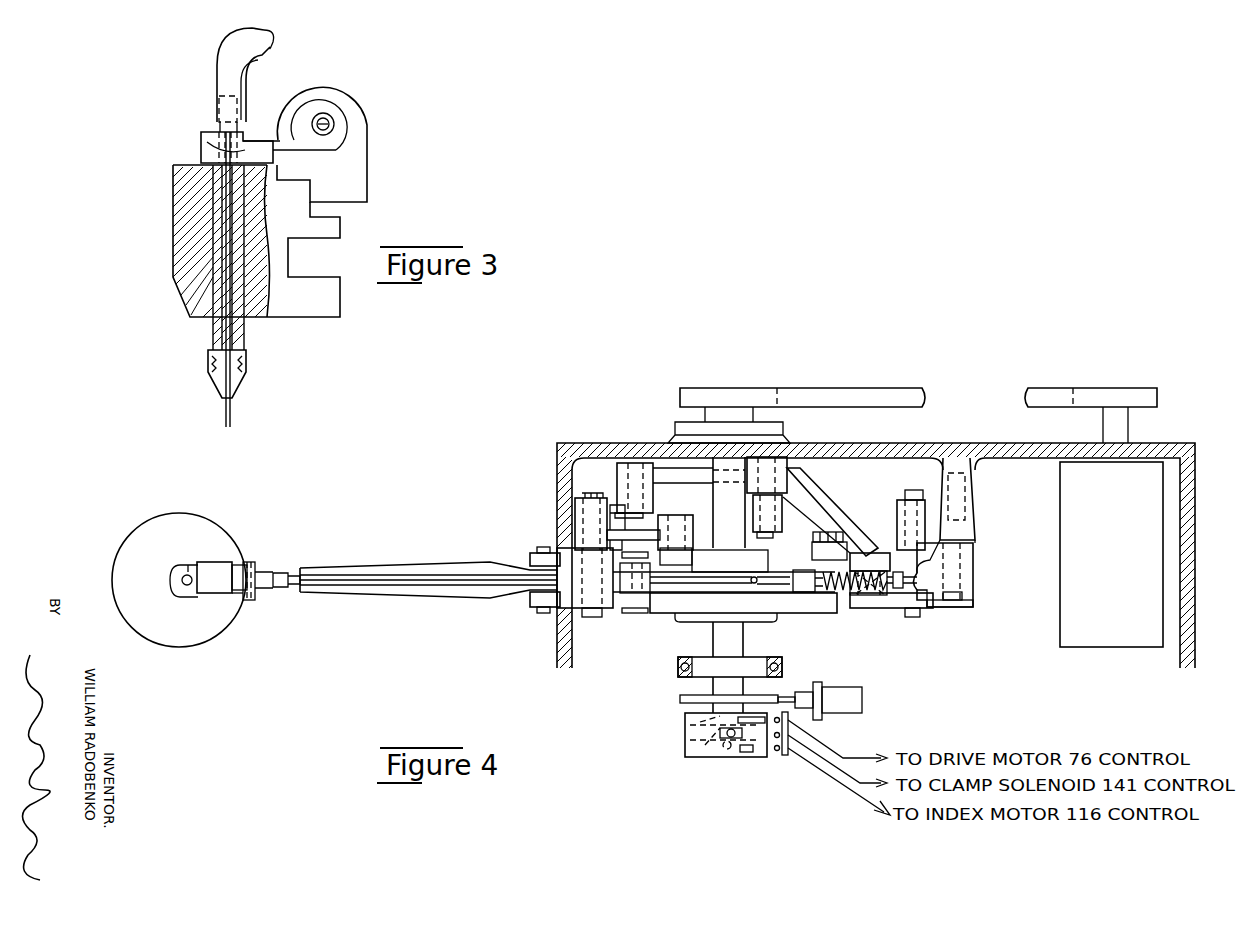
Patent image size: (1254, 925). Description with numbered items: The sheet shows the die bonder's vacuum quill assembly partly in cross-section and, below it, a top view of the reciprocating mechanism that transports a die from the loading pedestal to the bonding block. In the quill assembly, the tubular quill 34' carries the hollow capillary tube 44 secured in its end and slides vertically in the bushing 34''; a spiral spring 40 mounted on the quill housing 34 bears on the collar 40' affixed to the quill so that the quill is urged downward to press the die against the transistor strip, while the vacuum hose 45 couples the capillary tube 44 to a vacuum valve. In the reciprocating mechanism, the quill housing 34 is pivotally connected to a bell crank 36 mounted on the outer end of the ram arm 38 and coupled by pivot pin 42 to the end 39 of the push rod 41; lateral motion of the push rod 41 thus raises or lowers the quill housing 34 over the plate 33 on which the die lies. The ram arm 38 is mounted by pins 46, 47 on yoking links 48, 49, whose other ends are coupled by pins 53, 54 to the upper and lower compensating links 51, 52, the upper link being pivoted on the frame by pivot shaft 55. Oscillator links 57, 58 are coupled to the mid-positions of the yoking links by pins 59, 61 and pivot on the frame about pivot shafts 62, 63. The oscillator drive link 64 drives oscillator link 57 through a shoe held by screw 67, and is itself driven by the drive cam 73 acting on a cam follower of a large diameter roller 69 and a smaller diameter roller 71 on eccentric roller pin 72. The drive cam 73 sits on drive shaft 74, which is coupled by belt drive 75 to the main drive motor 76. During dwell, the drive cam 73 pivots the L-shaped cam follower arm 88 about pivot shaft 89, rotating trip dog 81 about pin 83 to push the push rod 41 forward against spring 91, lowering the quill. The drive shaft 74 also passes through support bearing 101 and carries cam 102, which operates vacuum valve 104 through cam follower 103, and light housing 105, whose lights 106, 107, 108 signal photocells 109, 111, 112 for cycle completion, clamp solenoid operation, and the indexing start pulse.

In FIG. 4, the plate 33 is at (217, 530).
In FIG. 3, the quill housing 34 is at (200, 241).
In FIG. 4, the quill housing 34 is at (186, 593).
In FIG. 3, the tubular quill 34' is at (178, 257).
In FIG. 3, the bushing 34'' is at (208, 257).
In FIG. 4, the bell crank 36 is at (245, 600).
In FIG. 4, the ram arm 38 is at (446, 562).
In FIG. 4, the end of push rod 39 is at (268, 572).
In FIG. 3, the spiral spring 40 is at (314, 195).
In FIG. 3, the collar 40' is at (216, 142).
In FIG. 4, the push rod 41 is at (383, 575).
In FIG. 4, the pivot pin 42 is at (250, 560).
In FIG. 3, the hollow capillary tube 44 is at (225, 409).
In FIG. 3, the vacuum hose 45 is at (217, 57).
In FIG. 4, the vacuum hose 45 is at (188, 570).
In FIG. 4, the pin 46 is at (542, 608).
In FIG. 4, the pin 47 is at (865, 553).
In FIG. 4, the yoking link 48 is at (542, 553).
In FIG. 4, the yoking link 49 is at (933, 608).
In FIG. 4, the upper compensating link 51 is at (650, 613).
In FIG. 4, the lower compensating link 52 is at (835, 516).
In FIG. 4, the pin 53 is at (632, 613).
In FIG. 4, the pin 54 is at (973, 606).
In FIG. 4, the pivot shaft 55 is at (962, 595).
In FIG. 4, the oscillator link 57 is at (615, 505).
In FIG. 4, the oscillator link 58 is at (897, 504).
In FIG. 4, the pin 59 is at (598, 617).
In FIG. 4, the pin 61 is at (905, 617).
In FIG. 4, the pivot shaft 62 is at (634, 463).
In FIG. 4, the pivot shaft 63 is at (976, 505).
In FIG. 4, the oscillator drive link 64 is at (686, 518).
In FIG. 4, the screw 67 is at (586, 578).
In FIG. 4, the large diameter roller 69 is at (707, 550).
In FIG. 4, the smaller diameter roller 71 is at (684, 575).
In FIG. 4, the eccentric roller pin 72 is at (660, 593).
In FIG. 4, the drive cam 73 is at (752, 578).
In FIG. 4, the drive shaft 74 is at (716, 496).
In FIG. 4, the belt drive 75 is at (880, 388).
In FIG. 4, the main drive motor 76 is at (1120, 515).
In FIG. 4, the L-shaped trip dog 81 is at (815, 592).
In FIG. 4, the pin 83 is at (812, 550).
In FIG. 4, the L-shaped cam follower arm 88 is at (785, 512).
In FIG. 4, the pivot shaft 89 is at (755, 520).
In FIG. 4, the spring 91 is at (860, 608).
In FIG. 4, the support bearing 101 is at (678, 666).
In FIG. 4, the cam 102 is at (680, 702).
In FIG. 4, the cam follower 103 is at (795, 692).
In FIG. 4, the vacuum valve 104 is at (840, 687).
In FIG. 4, the light housing 105 is at (690, 758).
In FIG. 4, the light 106 is at (688, 731).
In FIG. 4, the light 107 is at (700, 740).
In FIG. 4, the light 108 is at (720, 757).
In FIG. 4, the photocell 109 is at (795, 722).
In FIG. 4, the photocell 111 is at (777, 740).
In FIG. 4, the photocell 112 is at (780, 752).